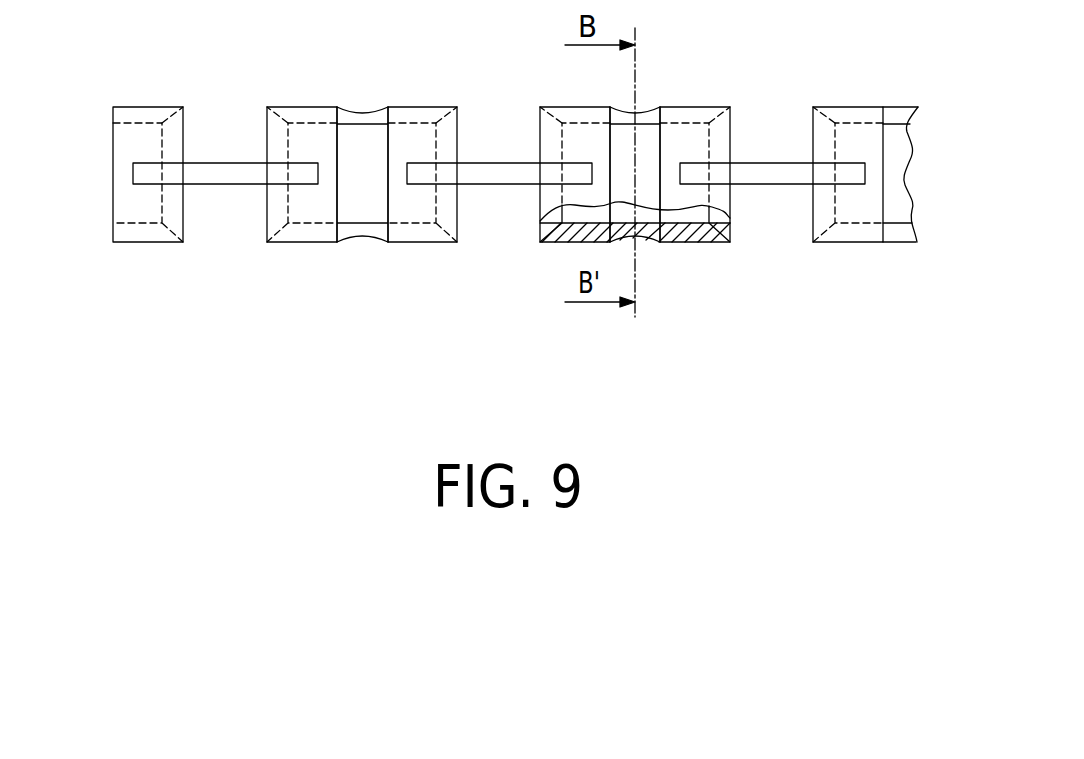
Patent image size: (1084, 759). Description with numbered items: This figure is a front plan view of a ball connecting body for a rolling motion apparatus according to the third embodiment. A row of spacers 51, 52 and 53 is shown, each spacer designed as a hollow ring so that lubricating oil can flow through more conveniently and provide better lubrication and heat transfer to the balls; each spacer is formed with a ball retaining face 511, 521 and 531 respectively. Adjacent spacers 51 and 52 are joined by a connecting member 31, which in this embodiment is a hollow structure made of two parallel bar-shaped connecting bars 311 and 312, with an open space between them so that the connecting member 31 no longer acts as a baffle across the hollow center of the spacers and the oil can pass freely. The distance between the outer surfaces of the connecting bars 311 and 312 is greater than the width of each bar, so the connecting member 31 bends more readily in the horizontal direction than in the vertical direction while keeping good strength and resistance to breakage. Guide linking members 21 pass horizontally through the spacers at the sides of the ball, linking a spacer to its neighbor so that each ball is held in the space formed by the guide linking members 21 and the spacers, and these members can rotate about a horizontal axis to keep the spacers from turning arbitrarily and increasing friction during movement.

The guide linking member 21 is at (230, 173).
The connecting member 31 is at (383, 96).
The connecting bar 311 is at (352, 116).
The connecting bar 312 is at (362, 230).
The spacer 51 is at (423, 237).
The ball retaining face 511 is at (447, 114).
The spacer 52 is at (297, 233).
The ball retaining face 521 is at (262, 108).
The spacer 53 is at (132, 233).
The ball retaining face 531 is at (190, 108).